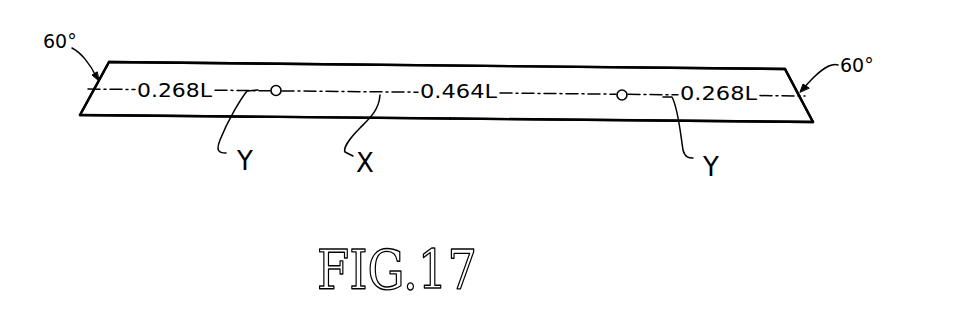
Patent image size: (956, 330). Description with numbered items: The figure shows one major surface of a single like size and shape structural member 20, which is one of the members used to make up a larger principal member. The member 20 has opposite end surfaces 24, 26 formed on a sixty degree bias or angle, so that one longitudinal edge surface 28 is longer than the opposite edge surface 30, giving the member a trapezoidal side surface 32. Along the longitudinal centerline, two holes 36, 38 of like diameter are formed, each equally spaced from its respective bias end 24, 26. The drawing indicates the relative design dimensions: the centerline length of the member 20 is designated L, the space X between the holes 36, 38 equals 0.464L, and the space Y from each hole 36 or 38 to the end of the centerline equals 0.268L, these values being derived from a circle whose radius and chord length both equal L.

The like size and shape structural member 20 is at (743, 64).
The opposite end surface 24 is at (80, 113).
The opposite end surface 26 is at (813, 118).
The longitudinal edge surface 28 is at (488, 120).
The opposite edge surface 30 is at (472, 65).
The trapezoidal side surface 32 is at (602, 120).
The hole 36 is at (279, 85).
The hole 38 is at (625, 89).